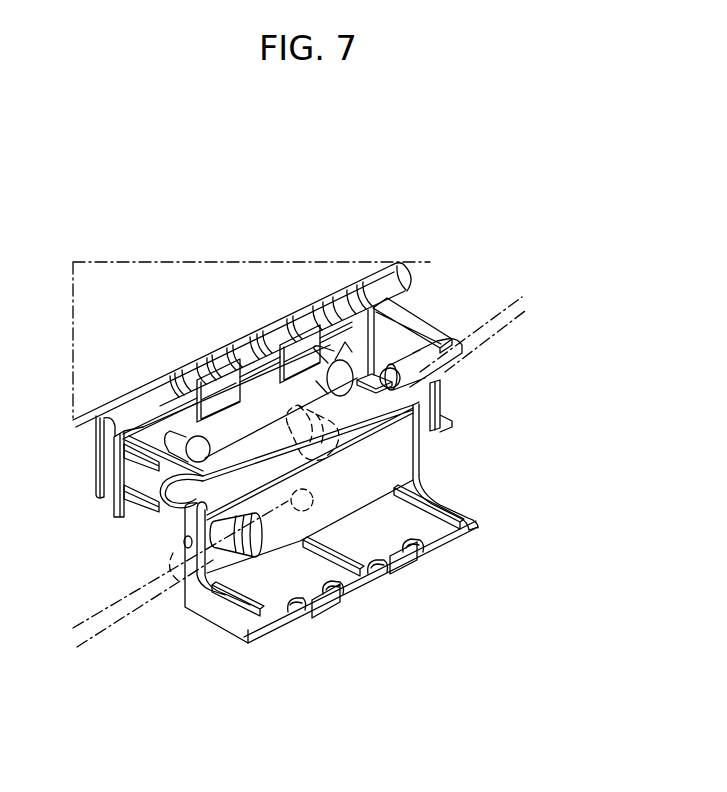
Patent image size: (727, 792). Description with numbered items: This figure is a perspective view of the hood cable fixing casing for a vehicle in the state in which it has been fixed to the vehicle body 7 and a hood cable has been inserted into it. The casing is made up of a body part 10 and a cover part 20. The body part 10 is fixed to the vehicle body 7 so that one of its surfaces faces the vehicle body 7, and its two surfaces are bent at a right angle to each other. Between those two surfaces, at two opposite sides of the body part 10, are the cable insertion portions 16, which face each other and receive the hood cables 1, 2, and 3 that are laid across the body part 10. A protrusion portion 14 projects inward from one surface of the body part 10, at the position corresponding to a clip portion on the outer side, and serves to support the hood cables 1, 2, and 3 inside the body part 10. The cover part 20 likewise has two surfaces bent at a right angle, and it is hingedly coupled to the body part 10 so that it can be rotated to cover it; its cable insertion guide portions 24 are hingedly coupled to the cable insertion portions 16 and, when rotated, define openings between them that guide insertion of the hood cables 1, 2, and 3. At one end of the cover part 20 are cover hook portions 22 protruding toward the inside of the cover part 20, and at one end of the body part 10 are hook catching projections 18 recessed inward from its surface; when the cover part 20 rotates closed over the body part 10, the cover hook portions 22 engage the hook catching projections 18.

The hood cable 1 is at (492, 331).
The hood cable 2 is at (110, 620).
The hood cable 3 is at (345, 405).
The vehicle body 7 is at (373, 282).
The body part 10 is at (96, 519).
The protrusion portion 14 is at (390, 308).
The cable insertion portion 16 is at (163, 538).
The hook catching projection 18 is at (284, 312).
The cover part 20 is at (222, 657).
The cover hook portion 22 is at (417, 558).
The cable insertion guide portion 24 is at (451, 468).